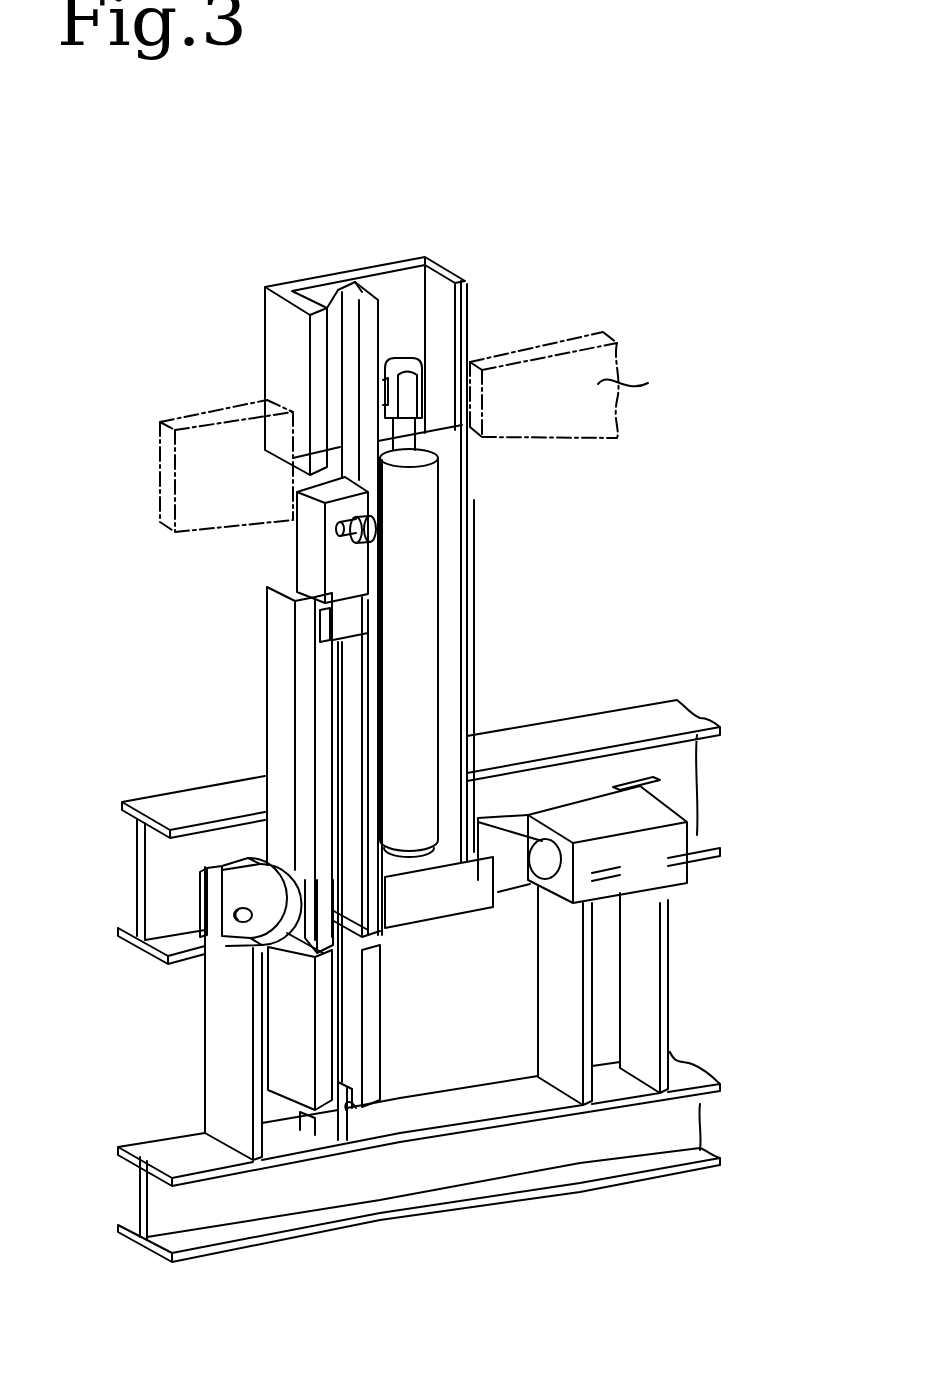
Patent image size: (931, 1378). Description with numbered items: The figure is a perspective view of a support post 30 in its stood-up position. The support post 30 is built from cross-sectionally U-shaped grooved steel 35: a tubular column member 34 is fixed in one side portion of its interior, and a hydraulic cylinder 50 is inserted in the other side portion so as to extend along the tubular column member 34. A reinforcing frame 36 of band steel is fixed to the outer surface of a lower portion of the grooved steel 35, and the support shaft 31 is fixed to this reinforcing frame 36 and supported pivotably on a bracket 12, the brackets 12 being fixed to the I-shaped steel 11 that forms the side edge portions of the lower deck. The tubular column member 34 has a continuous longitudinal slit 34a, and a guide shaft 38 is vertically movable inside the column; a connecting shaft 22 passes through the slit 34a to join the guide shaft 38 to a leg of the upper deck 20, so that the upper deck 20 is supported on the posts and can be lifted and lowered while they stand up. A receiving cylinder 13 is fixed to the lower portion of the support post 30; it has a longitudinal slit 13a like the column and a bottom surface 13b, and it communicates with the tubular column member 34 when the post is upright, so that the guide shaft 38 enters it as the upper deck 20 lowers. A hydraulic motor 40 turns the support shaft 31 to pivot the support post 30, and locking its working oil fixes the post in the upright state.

The I-shaped steel 11 is at (642, 722).
The bracket 12 is at (235, 891).
The receiving cylinder 13 is at (290, 1000).
The slit 13a is at (352, 1010).
The bottom surface 13b is at (348, 1105).
The upper deck 20 is at (655, 378).
The connecting shaft 22 is at (470, 472).
The support post 30 is at (501, 604).
The support shaft 31 is at (236, 916).
The tubular column member 34 is at (325, 683).
The slit 34a is at (348, 328).
The grooved steel 35 is at (468, 520).
The reinforcing frame 36 is at (293, 880).
The guide shaft 38 is at (350, 580).
The hydraulic motor 40 is at (645, 857).
The hydraulic cylinder 50 is at (430, 680).